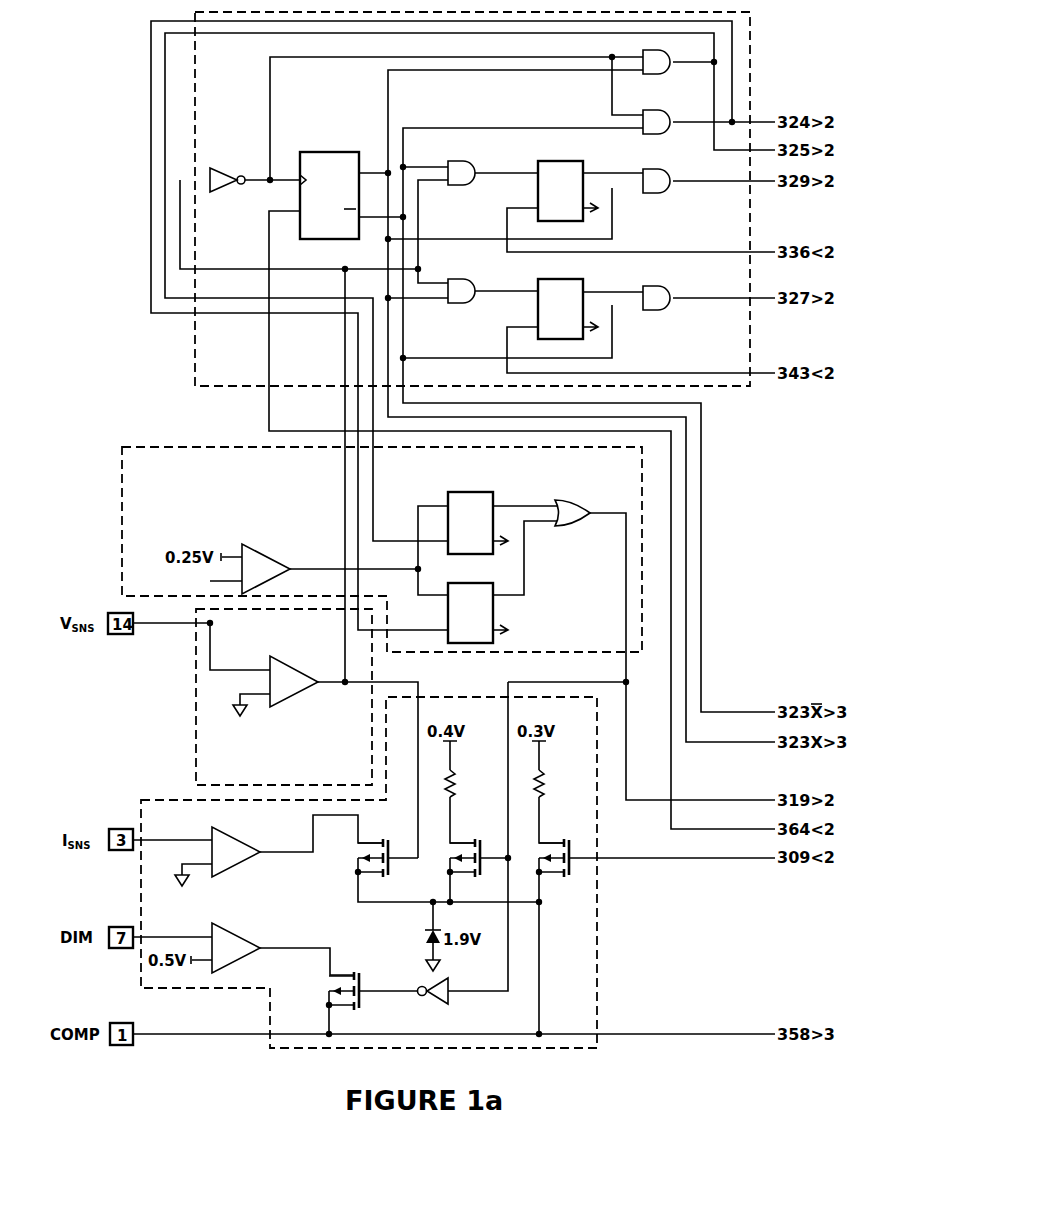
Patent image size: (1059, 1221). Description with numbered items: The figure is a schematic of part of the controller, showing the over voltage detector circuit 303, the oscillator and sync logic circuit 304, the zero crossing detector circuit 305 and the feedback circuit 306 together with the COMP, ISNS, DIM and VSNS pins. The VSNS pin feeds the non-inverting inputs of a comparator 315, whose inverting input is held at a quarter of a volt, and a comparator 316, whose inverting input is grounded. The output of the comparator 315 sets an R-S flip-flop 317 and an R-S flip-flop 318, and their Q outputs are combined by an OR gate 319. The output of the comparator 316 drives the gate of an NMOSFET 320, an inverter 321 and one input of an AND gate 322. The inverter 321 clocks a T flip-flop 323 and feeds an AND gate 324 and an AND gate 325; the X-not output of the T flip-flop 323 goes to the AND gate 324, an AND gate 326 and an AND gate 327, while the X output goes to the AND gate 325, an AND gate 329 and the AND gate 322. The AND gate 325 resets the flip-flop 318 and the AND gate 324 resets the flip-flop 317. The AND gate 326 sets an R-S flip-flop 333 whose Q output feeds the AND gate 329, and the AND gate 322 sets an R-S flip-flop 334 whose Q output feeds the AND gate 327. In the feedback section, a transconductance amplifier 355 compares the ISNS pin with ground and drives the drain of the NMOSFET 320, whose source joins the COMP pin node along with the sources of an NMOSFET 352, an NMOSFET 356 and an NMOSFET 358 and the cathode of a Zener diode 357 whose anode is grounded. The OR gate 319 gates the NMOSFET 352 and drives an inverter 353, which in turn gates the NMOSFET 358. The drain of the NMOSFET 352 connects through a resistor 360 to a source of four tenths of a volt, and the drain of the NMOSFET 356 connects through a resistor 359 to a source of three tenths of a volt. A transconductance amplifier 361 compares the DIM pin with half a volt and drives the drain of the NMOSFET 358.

The oscillator and sync logic circuit 304 is at (192, 328).
The inverter 321 is at (228, 168).
The T flip-flop 323 is at (330, 150).
The AND gate 325 is at (666, 72).
The AND gate 324 is at (666, 131).
The AND gate 329 is at (666, 191).
The AND gate 326 is at (492, 165).
The R-S flip-flop 333 is at (577, 165).
The AND gate 322 is at (479, 287).
The R-S flip-flop 334 is at (577, 284).
The AND gate 327 is at (666, 308).
The over voltage detector circuit 303 is at (199, 447).
The comparator 315 is at (276, 552).
The R-S flip-flop 318 is at (485, 497).
The R-S flip-flop 317 is at (498, 613).
The OR gate 319 is at (582, 501).
The zero crossing detector circuit 305 is at (190, 713).
The comparator 316 is at (304, 663).
The feedback circuit 306 is at (138, 801).
The transconductance amplifier 355 is at (246, 840).
The transconductance amplifier 361 is at (238, 932).
The NMOSFET 320 is at (390, 839).
The NMOSFET 352 is at (480, 839).
The NMOSFET 356 is at (567, 839).
The NMOSFET 358 is at (357, 973).
The 100 kohms resistor 360 is at (469, 783).
The 5 kohms resistor 359 is at (557, 783).
The 1.9 volt Zener diode 357 is at (415, 939).
The inverter 353 is at (430, 1002).